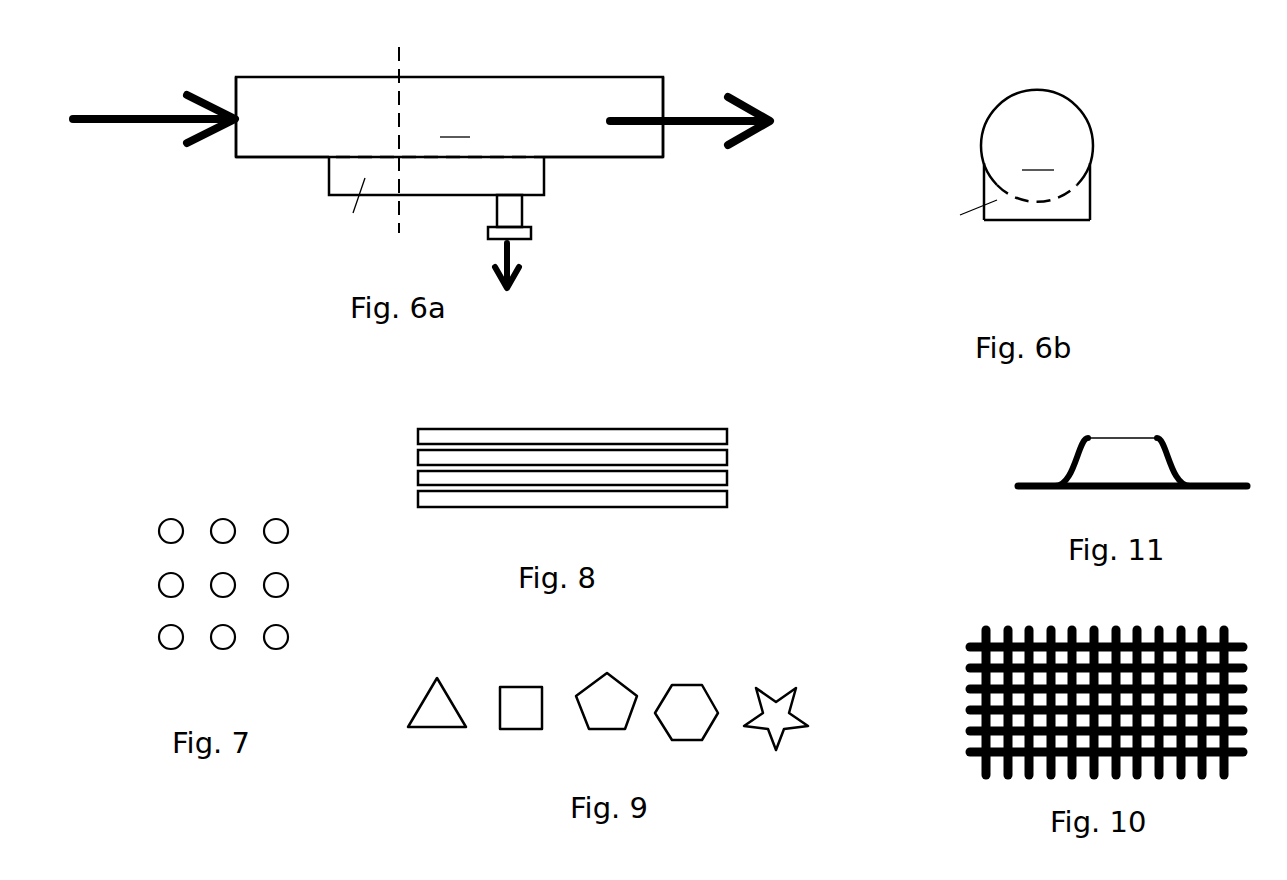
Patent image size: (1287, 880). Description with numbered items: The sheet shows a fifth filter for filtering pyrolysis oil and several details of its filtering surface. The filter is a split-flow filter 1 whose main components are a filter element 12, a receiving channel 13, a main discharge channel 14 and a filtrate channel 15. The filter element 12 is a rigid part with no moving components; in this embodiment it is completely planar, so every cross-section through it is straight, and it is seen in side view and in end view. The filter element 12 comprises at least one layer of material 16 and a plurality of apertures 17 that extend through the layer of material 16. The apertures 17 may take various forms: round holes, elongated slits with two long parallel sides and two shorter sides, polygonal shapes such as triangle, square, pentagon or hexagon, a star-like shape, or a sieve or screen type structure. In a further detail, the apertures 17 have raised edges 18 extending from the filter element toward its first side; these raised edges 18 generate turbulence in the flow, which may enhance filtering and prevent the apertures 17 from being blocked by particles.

In FIG. 6A, the split-flow filter 1 is at (235, 290).
In FIG. 6B, the split-flow filter 1 is at (912, 158).
In FIG. 6A, the filter element 12 is at (505, 157).
In FIG. 6B, the filter element 12 is at (1090, 183).
In FIG. 6A, the receiving channel 13 is at (257, 135).
In FIG. 6A, the main discharge channel 14 is at (643, 148).
In FIG. 6A, the filtrate channel 15 is at (513, 220).
In FIG. 11, the layer of material 16 is at (1022, 492).
In FIG. 7, the apertures 17 is at (218, 490).
In FIG. 8, the apertures 17 is at (668, 502).
In FIG. 9, the apertures 17 is at (428, 703).
In FIG. 11, the apertures 17 is at (1027, 439).
In FIG. 10, the apertures 17 is at (944, 619).
In FIG. 11, the raised edges 18 is at (1162, 445).